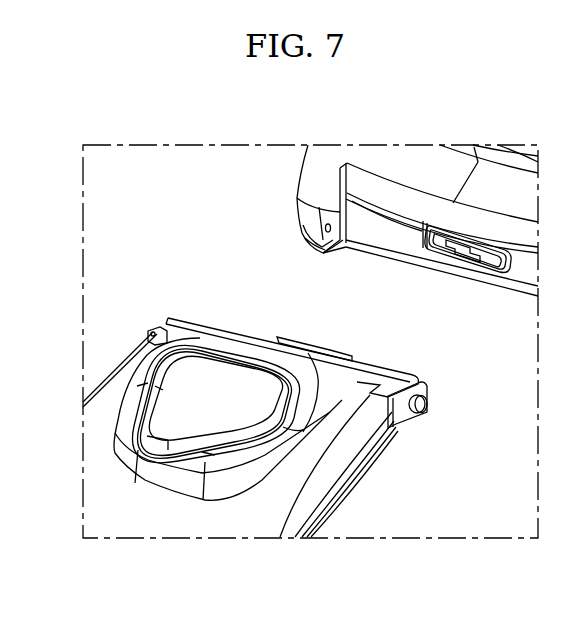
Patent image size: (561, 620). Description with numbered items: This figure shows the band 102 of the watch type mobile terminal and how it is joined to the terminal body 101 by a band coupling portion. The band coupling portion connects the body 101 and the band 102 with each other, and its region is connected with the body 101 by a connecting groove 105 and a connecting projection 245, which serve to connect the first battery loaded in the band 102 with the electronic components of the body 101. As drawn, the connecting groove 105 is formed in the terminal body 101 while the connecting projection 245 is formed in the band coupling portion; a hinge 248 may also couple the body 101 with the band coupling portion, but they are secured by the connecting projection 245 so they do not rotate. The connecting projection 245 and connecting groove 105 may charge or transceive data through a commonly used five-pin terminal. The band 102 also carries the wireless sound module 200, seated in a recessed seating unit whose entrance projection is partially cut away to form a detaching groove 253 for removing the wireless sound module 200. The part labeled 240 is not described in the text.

The body 101 is at (308, 180).
The band 102 is at (100, 500).
The connecting groove 105 is at (470, 272).
The wireless sound module 200 is at (222, 432).
The coupling member 240 is at (410, 412).
The connecting projection 245 is at (308, 341).
The hinge 248 is at (432, 402).
The detaching groove 253 is at (175, 458).